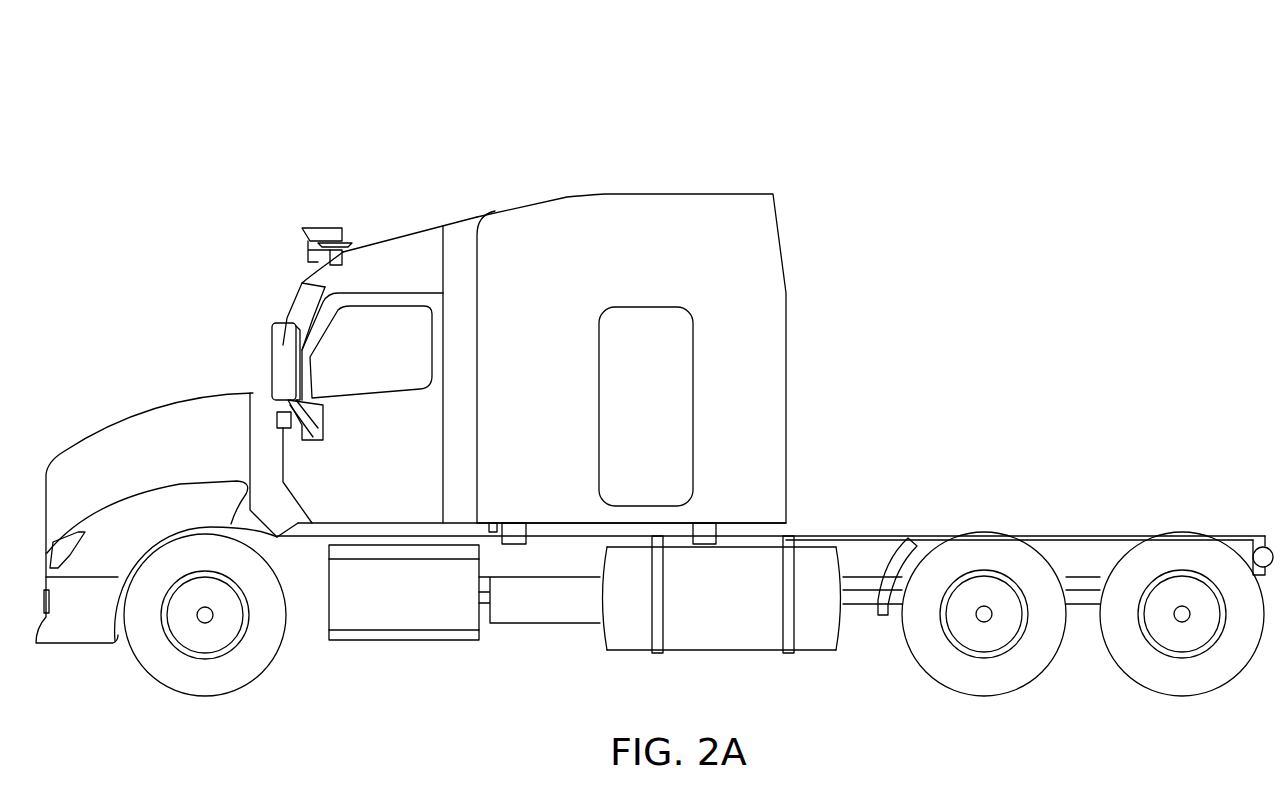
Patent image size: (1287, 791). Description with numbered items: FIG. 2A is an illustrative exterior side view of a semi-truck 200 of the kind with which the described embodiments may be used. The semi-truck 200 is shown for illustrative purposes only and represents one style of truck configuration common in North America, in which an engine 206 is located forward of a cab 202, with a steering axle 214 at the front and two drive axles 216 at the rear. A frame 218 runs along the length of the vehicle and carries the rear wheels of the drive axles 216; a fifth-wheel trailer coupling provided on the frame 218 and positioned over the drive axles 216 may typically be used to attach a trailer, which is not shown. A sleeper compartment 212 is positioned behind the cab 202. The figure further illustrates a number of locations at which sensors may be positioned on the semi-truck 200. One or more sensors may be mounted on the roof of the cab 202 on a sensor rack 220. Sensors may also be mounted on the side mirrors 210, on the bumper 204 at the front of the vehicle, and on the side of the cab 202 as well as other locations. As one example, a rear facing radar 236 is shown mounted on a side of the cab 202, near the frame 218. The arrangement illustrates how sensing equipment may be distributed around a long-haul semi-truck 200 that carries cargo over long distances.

The semi-truck 200 is at (355, 100).
The cab 202 is at (390, 233).
The bumper 204 is at (36, 640).
The engine 206 is at (140, 402).
The side mirrors 210 is at (282, 323).
The sleeper compartment 212 is at (653, 194).
The steering axle 214 is at (250, 655).
The drive axles 216 is at (983, 678).
The frame 218 is at (1090, 535).
The sensor rack 220 is at (318, 222).
The rear facing radar 236 is at (495, 520).